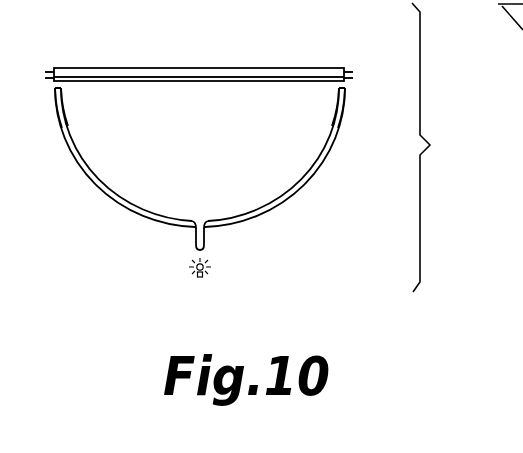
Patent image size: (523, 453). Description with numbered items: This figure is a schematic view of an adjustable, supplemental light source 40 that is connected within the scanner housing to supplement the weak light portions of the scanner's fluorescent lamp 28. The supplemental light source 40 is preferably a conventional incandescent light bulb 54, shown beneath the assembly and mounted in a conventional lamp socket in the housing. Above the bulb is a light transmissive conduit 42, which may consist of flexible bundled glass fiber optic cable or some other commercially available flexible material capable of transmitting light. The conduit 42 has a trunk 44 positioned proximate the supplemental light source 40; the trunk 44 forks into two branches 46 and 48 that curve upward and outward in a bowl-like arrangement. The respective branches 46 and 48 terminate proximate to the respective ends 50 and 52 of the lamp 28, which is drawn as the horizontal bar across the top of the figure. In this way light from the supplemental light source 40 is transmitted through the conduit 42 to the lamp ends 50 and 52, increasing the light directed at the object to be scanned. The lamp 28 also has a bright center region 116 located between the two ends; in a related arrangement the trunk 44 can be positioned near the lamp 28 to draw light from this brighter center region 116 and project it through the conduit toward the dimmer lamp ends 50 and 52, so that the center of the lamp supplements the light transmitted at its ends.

The fluorescent lamp 28 is at (276, 68).
The supplemental light source 40 is at (437, 147).
The light transmissive conduit 42 is at (326, 160).
The trunk 44 is at (207, 240).
The branch 46 is at (345, 109).
The branch 48 is at (55, 101).
The lamp end 50 is at (344, 71).
The lamp end 52 is at (68, 67).
The incandescent light bulb 54 is at (211, 268).
The bright center region 116 is at (203, 75).